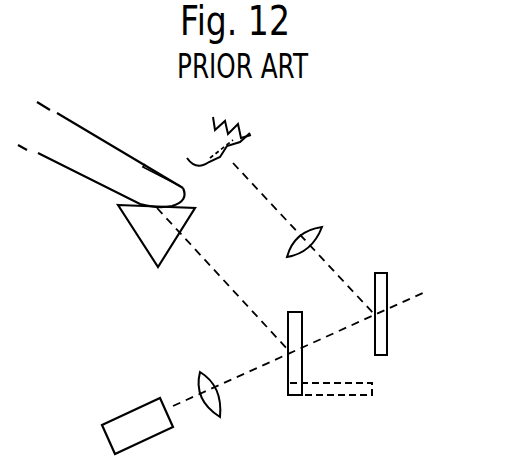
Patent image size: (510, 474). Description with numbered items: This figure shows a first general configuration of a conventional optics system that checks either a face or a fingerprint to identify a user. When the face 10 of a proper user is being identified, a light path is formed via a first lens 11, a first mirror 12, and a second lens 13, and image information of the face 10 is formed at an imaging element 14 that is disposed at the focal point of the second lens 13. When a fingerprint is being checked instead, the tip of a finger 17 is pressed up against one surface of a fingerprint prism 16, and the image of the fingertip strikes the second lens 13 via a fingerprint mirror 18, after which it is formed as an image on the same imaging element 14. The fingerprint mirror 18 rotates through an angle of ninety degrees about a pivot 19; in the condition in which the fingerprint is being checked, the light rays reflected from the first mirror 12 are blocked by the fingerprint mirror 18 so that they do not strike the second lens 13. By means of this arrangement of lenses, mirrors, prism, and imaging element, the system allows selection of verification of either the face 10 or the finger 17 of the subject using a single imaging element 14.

The face 10 is at (207, 166).
The first lens 11 is at (315, 225).
The first mirror 12 is at (388, 278).
The second lens 13 is at (202, 375).
The imaging element 14 is at (123, 415).
The fingerprint prism 16 is at (132, 230).
The finger 17 is at (90, 133).
The fingerprint mirror 18 is at (302, 362).
The pivot 19 is at (293, 397).